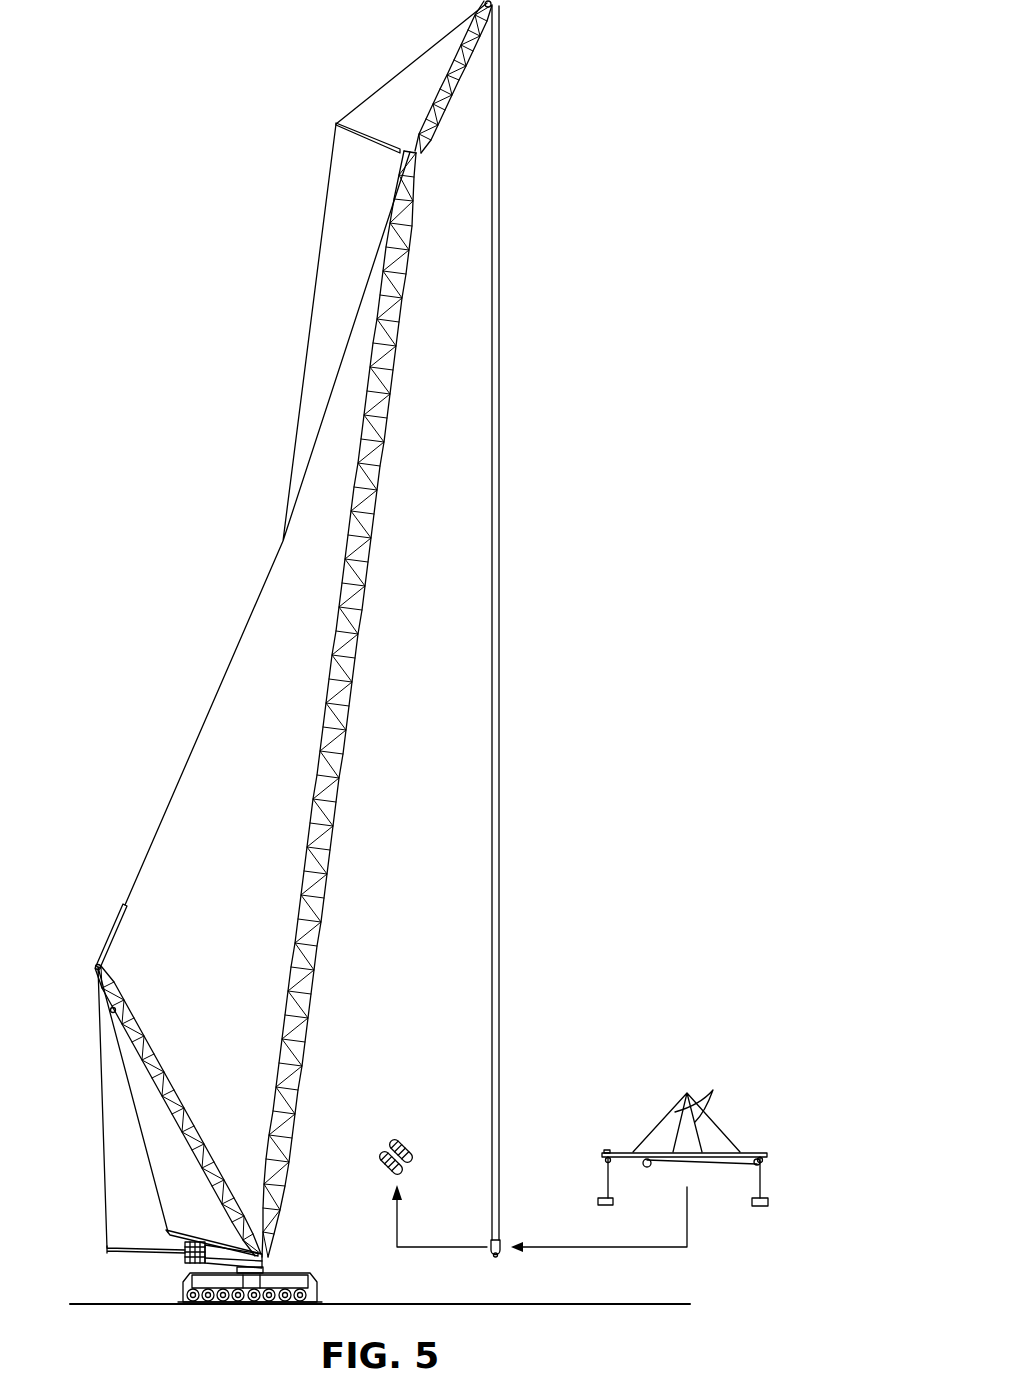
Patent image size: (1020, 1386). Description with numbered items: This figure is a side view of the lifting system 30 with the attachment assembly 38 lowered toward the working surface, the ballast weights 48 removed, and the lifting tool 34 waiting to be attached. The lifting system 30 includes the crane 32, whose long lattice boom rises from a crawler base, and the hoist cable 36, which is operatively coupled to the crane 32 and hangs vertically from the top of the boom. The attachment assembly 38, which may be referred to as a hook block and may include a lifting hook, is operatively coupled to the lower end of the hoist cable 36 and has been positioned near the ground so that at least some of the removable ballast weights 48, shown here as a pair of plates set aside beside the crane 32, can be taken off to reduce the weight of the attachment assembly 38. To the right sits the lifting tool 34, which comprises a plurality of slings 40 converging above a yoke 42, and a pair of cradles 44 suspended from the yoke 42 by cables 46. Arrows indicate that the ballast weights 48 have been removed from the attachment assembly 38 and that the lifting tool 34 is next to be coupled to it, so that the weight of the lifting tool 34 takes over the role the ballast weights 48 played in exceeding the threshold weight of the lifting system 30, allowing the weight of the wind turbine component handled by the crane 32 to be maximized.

The lifting system 30 is at (130, 498).
The crane 32 is at (350, 833).
The lifting tool 34 is at (752, 1109).
The hoist cable 36 is at (500, 372).
The attachment assembly 38 is at (492, 1245).
The slings 40 is at (714, 1089).
The yoke 42 is at (627, 1152).
The cradles 44 is at (605, 1208).
The cables 46 is at (607, 1187).
The ballast weights 48 is at (386, 1151).